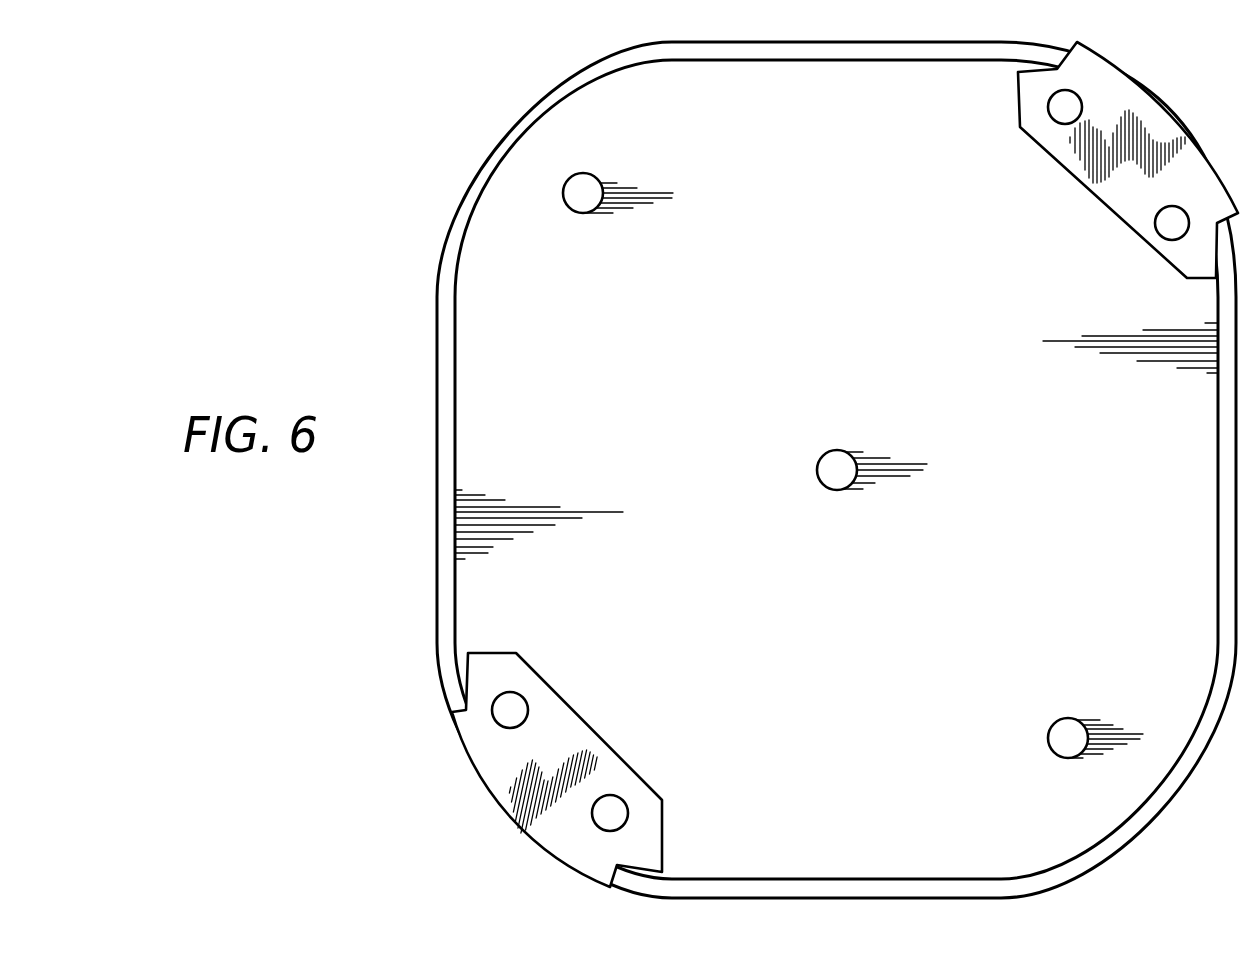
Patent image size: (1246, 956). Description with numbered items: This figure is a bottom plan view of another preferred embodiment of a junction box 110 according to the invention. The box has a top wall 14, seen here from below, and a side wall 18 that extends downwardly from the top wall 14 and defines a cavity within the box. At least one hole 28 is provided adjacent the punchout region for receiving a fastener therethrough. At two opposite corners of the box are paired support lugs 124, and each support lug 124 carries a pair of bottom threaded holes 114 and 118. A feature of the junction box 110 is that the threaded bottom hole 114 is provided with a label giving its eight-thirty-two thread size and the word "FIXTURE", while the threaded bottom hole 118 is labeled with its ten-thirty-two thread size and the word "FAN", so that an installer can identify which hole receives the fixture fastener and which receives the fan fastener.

The junction box 110 is at (489, 114).
The top wall 14 is at (1030, 507).
The side wall 18 is at (1180, 787).
The hole 28 is at (1060, 752).
The threaded bottom hole 114 is at (511, 729).
The threaded bottom hole 118 is at (596, 808).
The support lug 124 is at (663, 840).